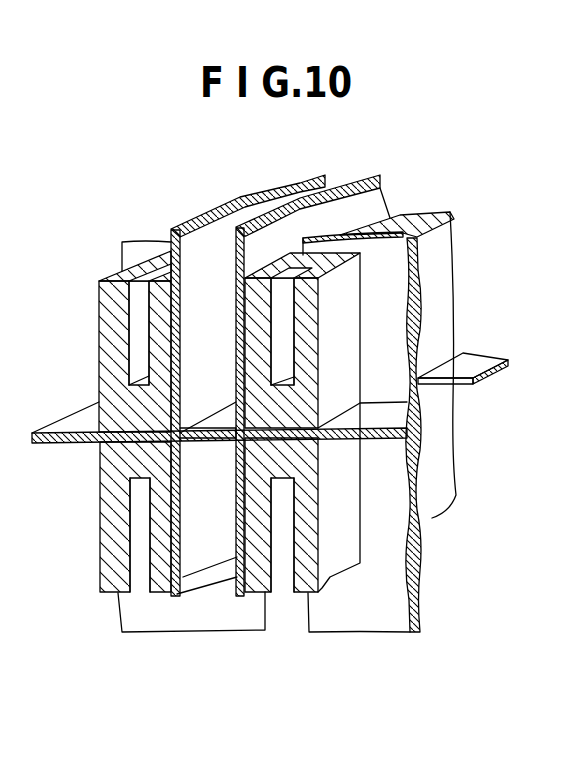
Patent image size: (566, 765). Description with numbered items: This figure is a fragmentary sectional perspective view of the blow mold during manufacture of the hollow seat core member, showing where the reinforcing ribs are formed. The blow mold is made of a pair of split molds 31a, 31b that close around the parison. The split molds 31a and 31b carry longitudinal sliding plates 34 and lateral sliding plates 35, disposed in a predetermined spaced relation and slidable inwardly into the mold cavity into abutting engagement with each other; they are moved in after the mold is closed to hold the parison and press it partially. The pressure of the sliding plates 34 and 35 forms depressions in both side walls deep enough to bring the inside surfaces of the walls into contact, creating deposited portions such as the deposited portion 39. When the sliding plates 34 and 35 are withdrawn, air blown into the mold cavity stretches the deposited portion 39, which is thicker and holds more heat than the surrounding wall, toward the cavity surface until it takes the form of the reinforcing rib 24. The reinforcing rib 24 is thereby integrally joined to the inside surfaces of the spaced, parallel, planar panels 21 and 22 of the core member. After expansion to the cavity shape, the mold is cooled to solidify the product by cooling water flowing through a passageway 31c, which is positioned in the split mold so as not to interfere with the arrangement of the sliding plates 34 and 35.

The planar panel 21 is at (383, 187).
The planar panel 22 is at (202, 228).
The reinforcing rib 24 is at (278, 187).
The split mold 31a is at (108, 344).
The split mold 31b is at (440, 247).
The passageway 31c is at (135, 306).
The longitudinal sliding plate 34 is at (145, 242).
The lateral sliding plate 35 is at (60, 433).
The deposited portion 39 is at (212, 438).